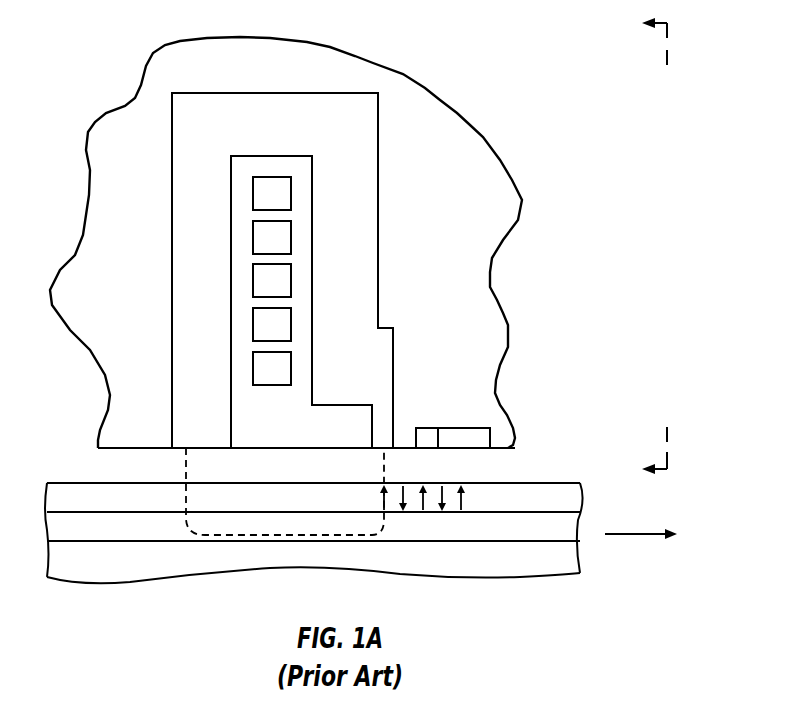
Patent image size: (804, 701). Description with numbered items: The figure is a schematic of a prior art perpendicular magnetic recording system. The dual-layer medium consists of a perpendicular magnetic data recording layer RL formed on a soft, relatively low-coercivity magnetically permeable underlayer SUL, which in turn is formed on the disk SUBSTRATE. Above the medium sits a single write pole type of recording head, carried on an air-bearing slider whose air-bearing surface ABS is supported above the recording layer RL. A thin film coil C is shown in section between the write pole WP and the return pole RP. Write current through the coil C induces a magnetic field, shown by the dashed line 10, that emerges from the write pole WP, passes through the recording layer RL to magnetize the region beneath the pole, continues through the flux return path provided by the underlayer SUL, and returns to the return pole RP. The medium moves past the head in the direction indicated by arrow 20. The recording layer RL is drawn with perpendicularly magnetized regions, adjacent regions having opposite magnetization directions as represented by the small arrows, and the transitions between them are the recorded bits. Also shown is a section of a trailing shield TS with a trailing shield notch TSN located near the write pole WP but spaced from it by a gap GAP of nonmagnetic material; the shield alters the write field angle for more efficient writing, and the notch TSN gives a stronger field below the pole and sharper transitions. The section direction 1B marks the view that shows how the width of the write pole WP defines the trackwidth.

The thin film coil C is at (270, 187).
The return pole RP is at (217, 268).
The write pole WP is at (370, 233).
The gap GAP is at (403, 437).
The trailing shield notch TSN is at (422, 428).
The trailing shield TS is at (463, 450).
The air-bearing surface ABS is at (118, 450).
The perpendicular magnetic data recording layer RL is at (313, 499).
The soft underlayer SUL is at (313, 529).
The disk substrate SUBSTRATE is at (314, 533).
The magnetic field 10 is at (190, 540).
The arrow indicating direction of medium motion 20 is at (652, 538).
The section view direction 1B is at (636, 247).